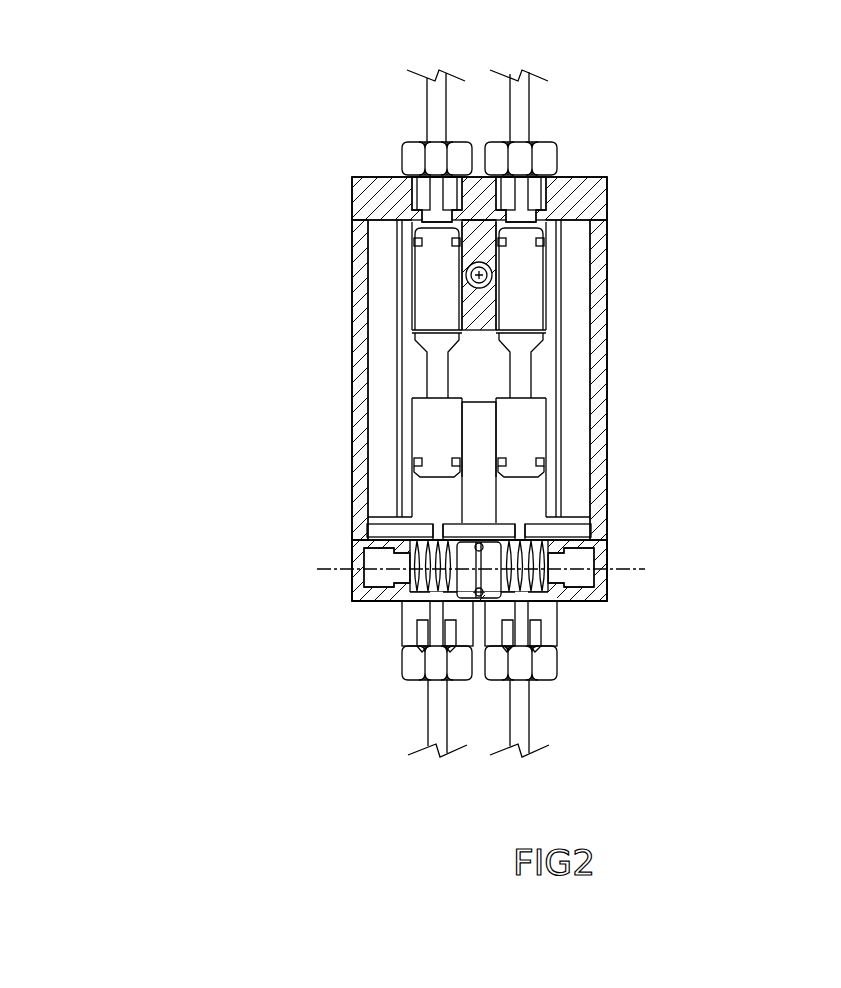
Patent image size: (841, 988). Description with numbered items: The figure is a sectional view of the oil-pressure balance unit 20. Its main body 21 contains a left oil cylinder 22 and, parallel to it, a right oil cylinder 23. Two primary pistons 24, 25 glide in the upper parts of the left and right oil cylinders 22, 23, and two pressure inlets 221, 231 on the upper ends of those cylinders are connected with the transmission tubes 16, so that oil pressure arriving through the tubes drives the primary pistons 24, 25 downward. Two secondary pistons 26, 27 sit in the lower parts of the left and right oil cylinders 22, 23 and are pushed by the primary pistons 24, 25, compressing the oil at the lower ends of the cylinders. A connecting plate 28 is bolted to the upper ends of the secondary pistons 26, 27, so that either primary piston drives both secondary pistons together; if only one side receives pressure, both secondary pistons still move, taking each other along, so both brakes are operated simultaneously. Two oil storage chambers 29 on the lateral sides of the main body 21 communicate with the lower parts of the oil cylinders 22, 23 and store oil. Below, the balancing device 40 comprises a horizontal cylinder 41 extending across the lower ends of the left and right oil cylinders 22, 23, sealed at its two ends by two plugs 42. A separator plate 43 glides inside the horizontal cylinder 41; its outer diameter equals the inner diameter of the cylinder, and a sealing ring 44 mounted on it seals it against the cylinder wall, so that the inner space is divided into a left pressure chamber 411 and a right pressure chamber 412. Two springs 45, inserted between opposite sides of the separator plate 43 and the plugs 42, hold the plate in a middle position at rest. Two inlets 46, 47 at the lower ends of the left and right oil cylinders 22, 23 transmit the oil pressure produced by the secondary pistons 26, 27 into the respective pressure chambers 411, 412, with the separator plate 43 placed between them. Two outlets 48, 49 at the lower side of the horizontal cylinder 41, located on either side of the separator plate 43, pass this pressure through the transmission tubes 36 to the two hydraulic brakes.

The oil-pressure balance unit 20 is at (343, 186).
The main body 21 is at (605, 210).
The left oil cylinder 22 is at (432, 487).
The right oil cylinder 23 is at (525, 497).
The primary piston 24 is at (430, 290).
The primary piston 25 is at (533, 297).
The secondary piston 26 is at (430, 420).
The secondary piston 27 is at (520, 412).
The connecting plate 28 is at (485, 347).
The oil storage chamber 29 is at (580, 437).
The pressure inlet 221 is at (430, 197).
The pressure inlet 231 is at (545, 195).
The transmission tube 16 is at (527, 105).
The transmission tube 36 is at (428, 728).
The balancing device 40 is at (330, 581).
The horizontal cylinder 41 is at (555, 602).
The left pressure chamber 411 is at (357, 556).
The right pressure chamber 412 is at (600, 549).
The plug 42 is at (600, 587).
The separator plate 43 is at (487, 598).
The sealing ring 44 is at (480, 600).
The spring 45 is at (410, 602).
The inlet 46 is at (437, 530).
The inlet 47 is at (520, 532).
The outlet 48 is at (433, 630).
The outlet 49 is at (522, 627).